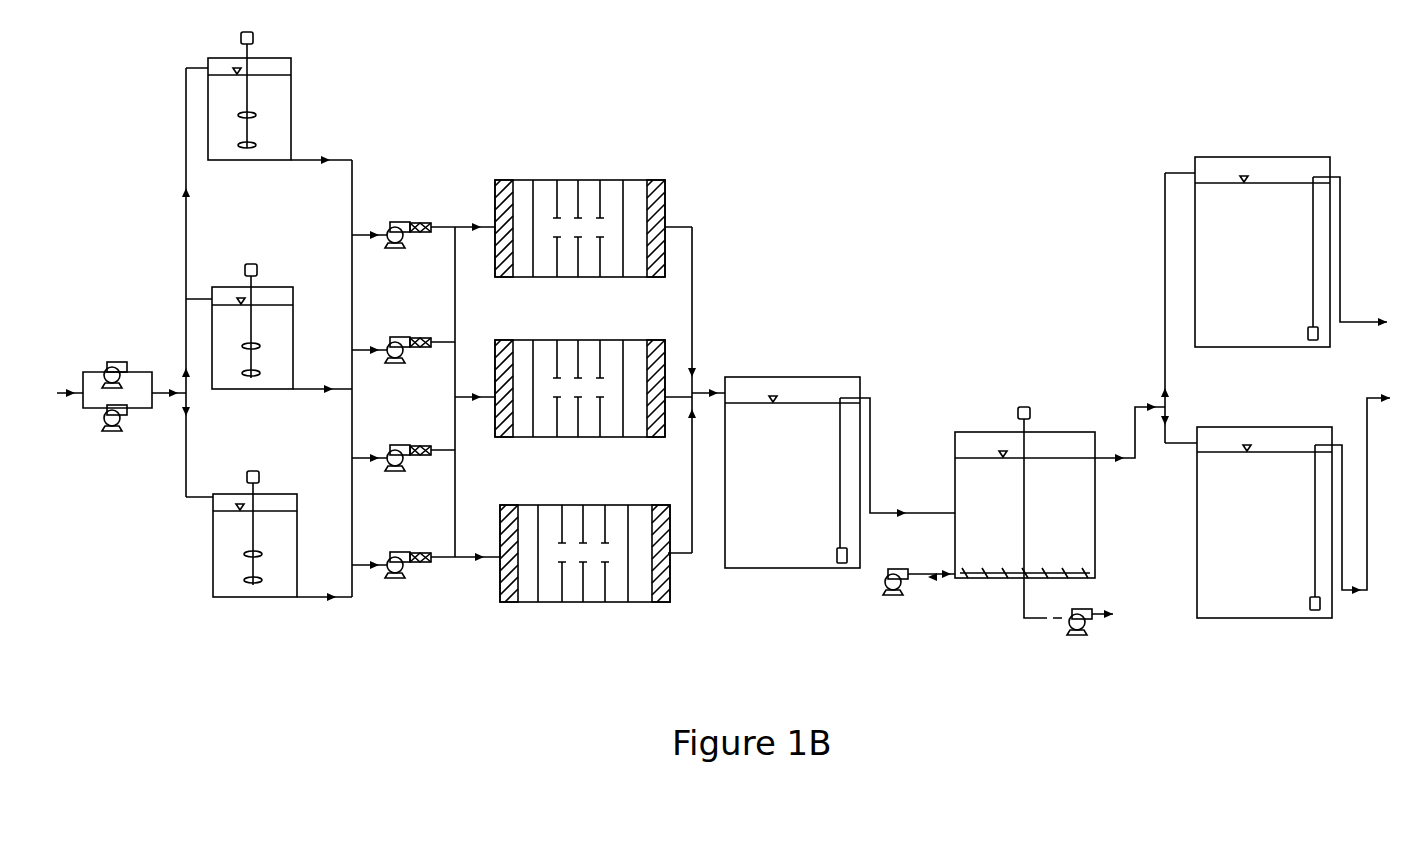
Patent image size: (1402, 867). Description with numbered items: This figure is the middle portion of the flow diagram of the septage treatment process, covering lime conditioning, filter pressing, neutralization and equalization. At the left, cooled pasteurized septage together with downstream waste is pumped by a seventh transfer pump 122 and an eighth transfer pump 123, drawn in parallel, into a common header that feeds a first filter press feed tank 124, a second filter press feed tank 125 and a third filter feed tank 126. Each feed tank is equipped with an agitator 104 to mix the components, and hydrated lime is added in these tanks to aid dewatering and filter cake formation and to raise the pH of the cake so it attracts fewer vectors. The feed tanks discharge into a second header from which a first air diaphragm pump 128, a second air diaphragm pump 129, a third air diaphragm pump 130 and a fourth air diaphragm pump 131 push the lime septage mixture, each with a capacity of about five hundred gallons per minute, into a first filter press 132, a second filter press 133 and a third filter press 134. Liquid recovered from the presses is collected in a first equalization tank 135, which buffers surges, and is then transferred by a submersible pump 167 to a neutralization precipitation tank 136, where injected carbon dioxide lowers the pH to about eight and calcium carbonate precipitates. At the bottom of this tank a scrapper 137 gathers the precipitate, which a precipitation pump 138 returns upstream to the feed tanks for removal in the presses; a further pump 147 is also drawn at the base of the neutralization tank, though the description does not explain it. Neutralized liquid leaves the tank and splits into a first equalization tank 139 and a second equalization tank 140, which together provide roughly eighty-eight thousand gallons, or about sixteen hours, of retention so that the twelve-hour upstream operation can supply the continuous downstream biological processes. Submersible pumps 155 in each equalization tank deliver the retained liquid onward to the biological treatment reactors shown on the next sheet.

The agitator 104 is at (255, 139).
The seventh transfer pump 122 is at (113, 358).
The eighth transfer pump 123 is at (113, 436).
The first filter press feed tank 124 is at (291, 90).
The second filter press feed tank 125 is at (295, 305).
The third filter feed tank 126 is at (298, 536).
The first air diaphragm pump 128 is at (399, 213).
The second air diaphragm pump 129 is at (396, 332).
The third air diaphragm pump 130 is at (396, 441).
The fourth air diaphragm pump 131 is at (396, 546).
The first filter press 132 is at (576, 176).
The second filter press 133 is at (577, 336).
The third filter press 134 is at (575, 501).
The first equalization tank 135 is at (783, 510).
The neutralization precipitation tank 136 is at (951, 435).
The scrapper 137 is at (979, 603).
The precipitation pump 138 is at (1087, 645).
The first equalization tank 139 is at (1262, 152).
The second equalization tank 140 is at (1237, 420).
The recirculation pump 147 is at (897, 603).
The submersible pump 155 is at (1303, 335).
The submersible pump 167 is at (843, 567).